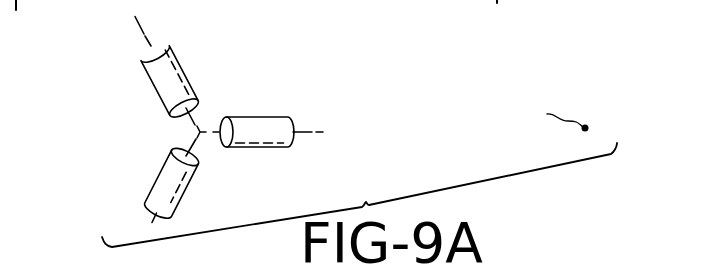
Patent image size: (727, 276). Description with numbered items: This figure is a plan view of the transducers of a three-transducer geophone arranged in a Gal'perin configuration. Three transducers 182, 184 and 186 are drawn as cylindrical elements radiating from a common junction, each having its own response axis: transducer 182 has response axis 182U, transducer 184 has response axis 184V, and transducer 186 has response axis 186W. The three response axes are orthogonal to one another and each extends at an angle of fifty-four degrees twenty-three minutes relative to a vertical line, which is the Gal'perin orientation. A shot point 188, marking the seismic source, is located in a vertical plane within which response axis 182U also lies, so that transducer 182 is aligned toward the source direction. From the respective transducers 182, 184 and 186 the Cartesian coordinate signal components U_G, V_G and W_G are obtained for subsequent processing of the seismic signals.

The transducer 182 is at (247, 117).
The response axis 182U is at (306, 132).
The transducer 184 is at (141, 62).
The response axis 184V is at (143, 29).
The transducer 186 is at (161, 175).
The response axis 186W is at (149, 228).
The shot point 188 is at (585, 127).